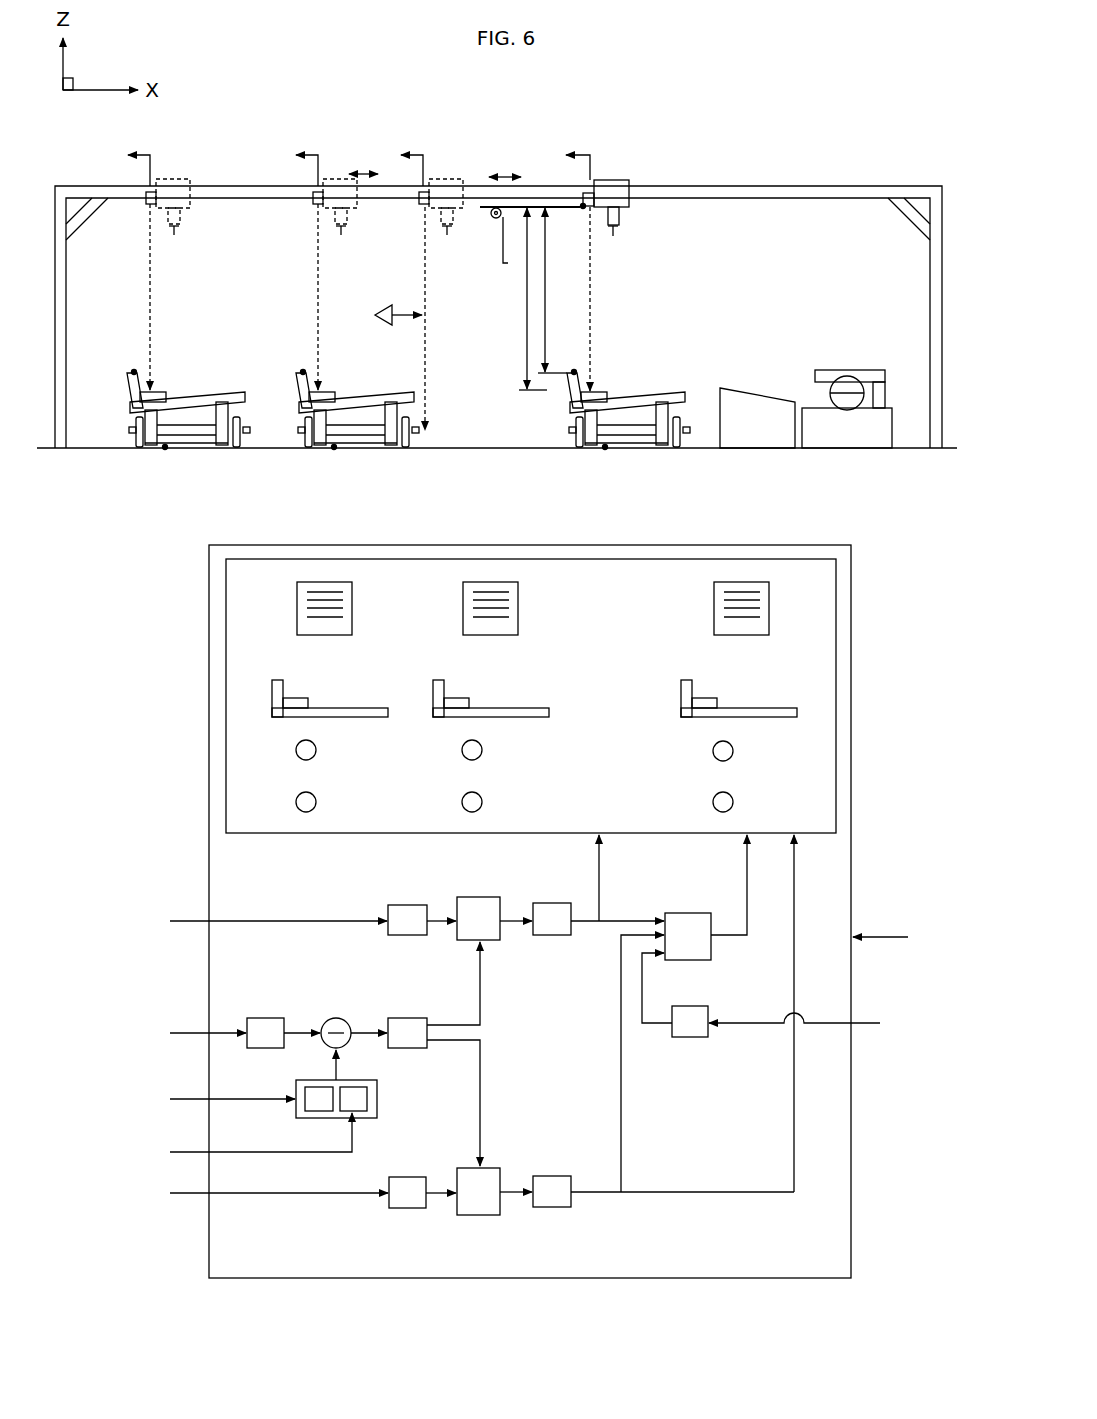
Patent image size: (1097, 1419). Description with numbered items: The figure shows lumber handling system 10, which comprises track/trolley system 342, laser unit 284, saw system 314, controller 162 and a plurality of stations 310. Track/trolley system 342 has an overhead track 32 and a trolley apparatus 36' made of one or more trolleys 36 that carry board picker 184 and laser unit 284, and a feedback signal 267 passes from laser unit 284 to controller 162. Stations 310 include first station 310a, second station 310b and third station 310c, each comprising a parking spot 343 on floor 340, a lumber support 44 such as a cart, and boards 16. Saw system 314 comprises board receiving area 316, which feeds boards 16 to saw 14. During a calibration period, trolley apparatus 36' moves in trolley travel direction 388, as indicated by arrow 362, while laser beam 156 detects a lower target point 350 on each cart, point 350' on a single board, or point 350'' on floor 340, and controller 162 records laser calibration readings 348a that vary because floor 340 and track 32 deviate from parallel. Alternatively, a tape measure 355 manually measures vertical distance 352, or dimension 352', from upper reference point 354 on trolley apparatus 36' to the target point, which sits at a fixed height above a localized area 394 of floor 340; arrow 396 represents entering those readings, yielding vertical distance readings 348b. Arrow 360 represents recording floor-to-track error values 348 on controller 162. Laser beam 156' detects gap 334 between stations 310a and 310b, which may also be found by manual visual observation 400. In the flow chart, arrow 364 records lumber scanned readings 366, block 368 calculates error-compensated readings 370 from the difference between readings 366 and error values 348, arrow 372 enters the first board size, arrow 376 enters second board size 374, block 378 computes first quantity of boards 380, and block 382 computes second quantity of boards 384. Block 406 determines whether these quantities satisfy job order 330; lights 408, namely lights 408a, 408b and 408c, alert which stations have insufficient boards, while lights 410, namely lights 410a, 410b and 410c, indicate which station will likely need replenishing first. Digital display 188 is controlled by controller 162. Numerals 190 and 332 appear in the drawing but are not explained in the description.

The lumber handling system 10 is at (862, 92).
The saw 14 is at (860, 370).
The board 16 is at (163, 392).
The overhead track 32 is at (778, 186).
The trolley 36 is at (410, 169).
The trolley apparatus 36' is at (630, 164).
The lumber support 44 is at (130, 402).
The laser beam 156 is at (360, 297).
The laser beam 156' is at (463, 318).
The controller 162 is at (209, 860).
The board picker 184 is at (615, 233).
The digital display 188 is at (226, 640).
The cart icon 190 is at (253, 702).
The feedback signal 267 is at (318, 154).
The laser unit 284 is at (583, 196).
The plurality of stations 310 is at (112, 386).
The first station 310a is at (659, 327).
The second station 310b is at (357, 329).
The third station 310c is at (208, 344).
The saw system 314 is at (766, 430).
The board receiving area 316 is at (770, 388).
The job order 330 is at (686, 1037).
The deck edge 332 is at (300, 402).
The gap 334 is at (563, 457).
The floor 340 is at (262, 447).
The track/trolley system 342 is at (627, 203).
The parking spot 343 is at (378, 447).
The floor-to-track error values 348 is at (377, 1093).
The laser calibration readings 348a is at (318, 1111).
The vertical distance readings 348b is at (360, 1111).
The lower target point 350 is at (410, 328).
The lower target point 350' is at (606, 341).
The lower target point 350'' is at (646, 474).
The vertical distance 352 is at (500, 290).
The dimension 352' is at (490, 299).
The upper reference point 354 is at (583, 209).
The tape measure 355 is at (497, 220).
The arrow 360 is at (190, 1097).
The arrow 362 is at (503, 174).
The arrow 364 is at (190, 1030).
The lumber scanned readings 366 is at (265, 1018).
The block 368 is at (338, 1018).
The error-compensated readings 370 is at (405, 905).
The arrow 372 is at (190, 918).
The second board size 374 is at (405, 1208).
The arrow 376 is at (190, 1190).
The block 378 is at (480, 896).
The first quantity of boards 380 is at (550, 936).
The block 382 is at (480, 1216).
The second quantity of boards 384 is at (548, 1175).
The trolley travel direction 388 is at (365, 170).
The localized area 394 is at (530, 449).
The arrow 396 is at (190, 1150).
The manual visual observation 400 is at (385, 305).
The block 406 is at (690, 912).
The lights 408 is at (253, 750).
The light 408a is at (730, 744).
The light 408b is at (479, 743).
The light 408c is at (313, 743).
The lights 410 is at (253, 805).
The light 410a is at (730, 795).
The light 410b is at (479, 795).
The light 410c is at (313, 795).